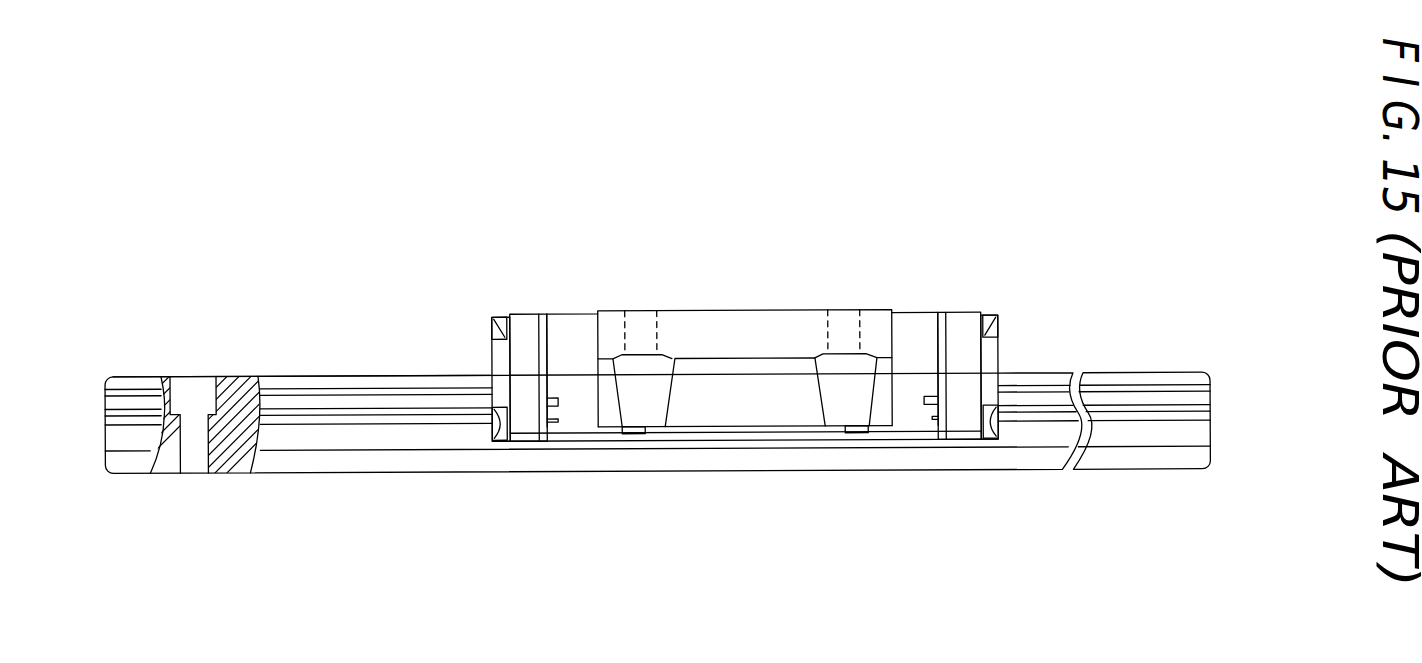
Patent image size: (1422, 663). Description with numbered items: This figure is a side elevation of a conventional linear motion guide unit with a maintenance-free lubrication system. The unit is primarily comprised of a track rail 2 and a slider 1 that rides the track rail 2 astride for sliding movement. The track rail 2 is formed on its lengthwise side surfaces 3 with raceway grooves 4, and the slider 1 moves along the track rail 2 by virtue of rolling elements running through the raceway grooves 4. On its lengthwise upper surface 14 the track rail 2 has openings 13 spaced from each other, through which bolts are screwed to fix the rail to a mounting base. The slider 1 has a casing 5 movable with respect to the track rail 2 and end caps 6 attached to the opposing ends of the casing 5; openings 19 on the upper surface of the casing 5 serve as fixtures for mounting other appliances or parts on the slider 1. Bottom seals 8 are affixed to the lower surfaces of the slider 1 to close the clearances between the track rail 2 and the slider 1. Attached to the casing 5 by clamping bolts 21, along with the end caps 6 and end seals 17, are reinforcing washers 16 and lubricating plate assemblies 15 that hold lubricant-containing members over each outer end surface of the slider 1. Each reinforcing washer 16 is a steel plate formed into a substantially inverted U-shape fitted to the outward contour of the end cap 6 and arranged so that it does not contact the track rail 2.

The slider 1 is at (844, 311).
The track rail 2 is at (315, 378).
The lengthwise side surfaces 3 is at (350, 446).
The raceway grooves 4 is at (370, 400).
The casing 5 is at (727, 338).
The end caps 6 is at (572, 343).
The bottom seals 8 is at (735, 437).
The openings 13 is at (203, 452).
The lengthwise upper surface 14 is at (290, 378).
The lubricating plate assemblies 15 is at (527, 408).
The reinforcing washers 16 is at (551, 316).
The end seals 17 is at (489, 358).
The openings 19 is at (628, 336).
The clamping bolts 21 is at (497, 318).